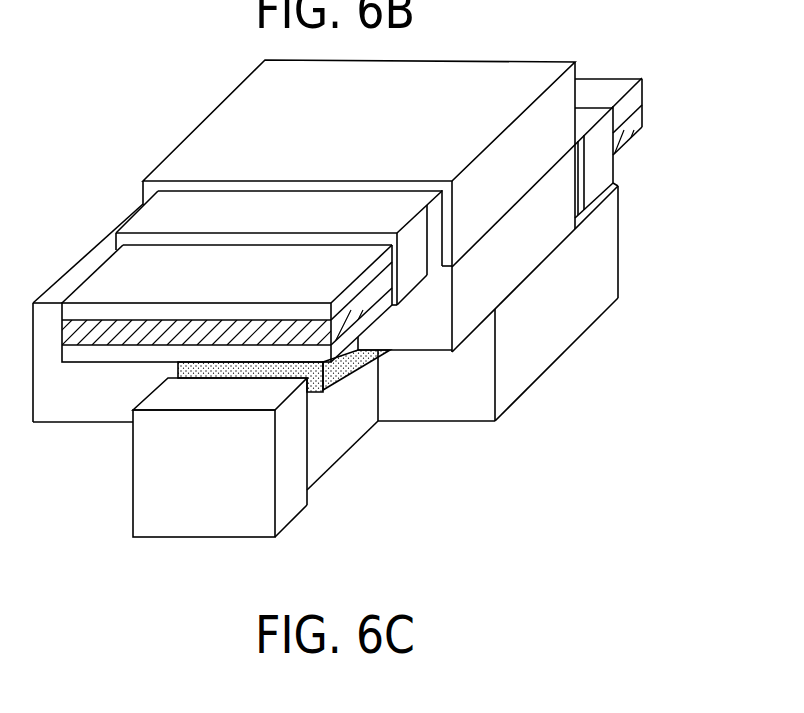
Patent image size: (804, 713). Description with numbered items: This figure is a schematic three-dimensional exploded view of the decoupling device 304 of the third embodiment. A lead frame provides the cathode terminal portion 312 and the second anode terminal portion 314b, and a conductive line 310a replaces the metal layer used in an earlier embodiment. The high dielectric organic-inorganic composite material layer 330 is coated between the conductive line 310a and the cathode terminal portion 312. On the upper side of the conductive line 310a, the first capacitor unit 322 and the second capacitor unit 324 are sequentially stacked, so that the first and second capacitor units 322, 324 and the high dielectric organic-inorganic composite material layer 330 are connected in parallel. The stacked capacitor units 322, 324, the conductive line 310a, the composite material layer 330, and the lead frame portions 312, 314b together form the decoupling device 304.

The decoupling device 304 is at (531, 589).
The conductive line 310a is at (342, 428).
The cathode terminal portion 312 is at (560, 327).
The second anode terminal portion 314b is at (200, 511).
The first capacitor unit 322 is at (654, 156).
The second capacitor unit 324 is at (600, 57).
The high dielectric organic-inorganic composite material layer 330 is at (202, 372).